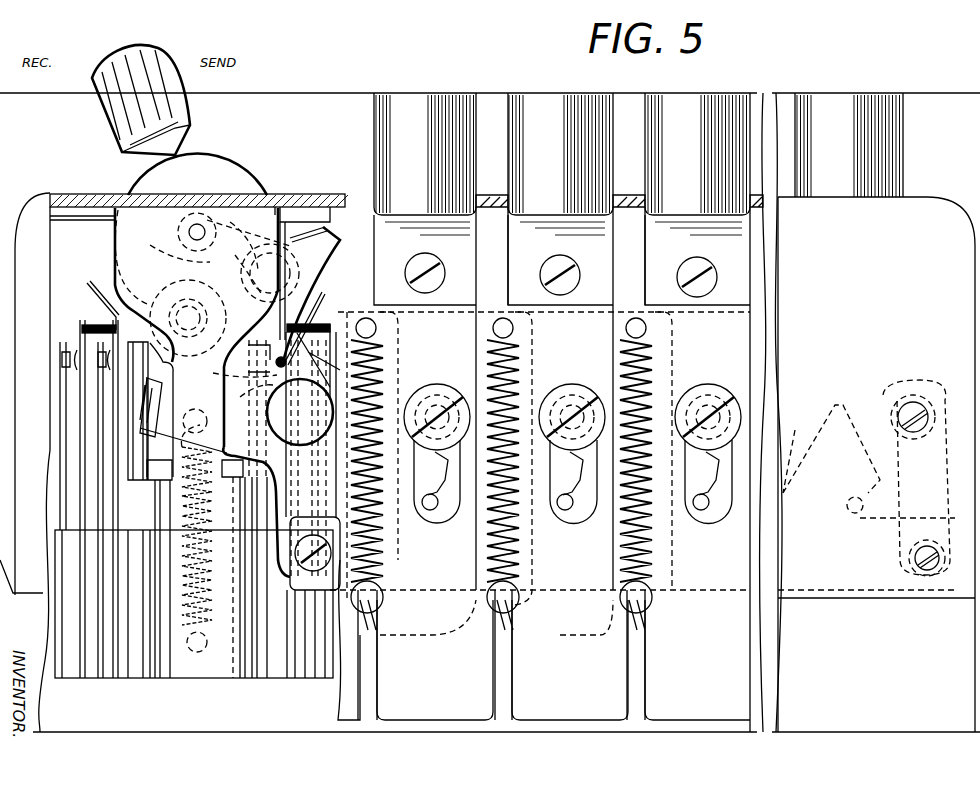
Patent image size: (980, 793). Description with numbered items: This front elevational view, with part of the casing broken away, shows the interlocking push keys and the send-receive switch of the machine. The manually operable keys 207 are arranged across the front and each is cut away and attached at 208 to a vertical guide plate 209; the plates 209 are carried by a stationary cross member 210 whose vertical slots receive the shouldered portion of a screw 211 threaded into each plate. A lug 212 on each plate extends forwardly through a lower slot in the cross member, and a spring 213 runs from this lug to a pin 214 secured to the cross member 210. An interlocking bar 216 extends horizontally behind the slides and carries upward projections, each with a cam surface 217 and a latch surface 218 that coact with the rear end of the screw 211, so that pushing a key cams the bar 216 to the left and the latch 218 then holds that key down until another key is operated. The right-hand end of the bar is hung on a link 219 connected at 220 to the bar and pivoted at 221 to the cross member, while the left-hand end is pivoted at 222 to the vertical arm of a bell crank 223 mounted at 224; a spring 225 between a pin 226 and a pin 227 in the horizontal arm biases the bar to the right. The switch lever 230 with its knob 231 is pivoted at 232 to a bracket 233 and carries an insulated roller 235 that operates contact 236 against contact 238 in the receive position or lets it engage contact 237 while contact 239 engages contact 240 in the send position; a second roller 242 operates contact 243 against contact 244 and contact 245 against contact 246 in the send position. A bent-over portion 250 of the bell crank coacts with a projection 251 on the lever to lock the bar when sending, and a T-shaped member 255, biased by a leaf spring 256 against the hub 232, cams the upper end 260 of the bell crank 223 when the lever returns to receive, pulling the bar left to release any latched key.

The manually operable key 207 is at (520, 120).
The attachment point 208 is at (427, 262).
The vertical guide plate 209 is at (473, 292).
The stationary cross member 210 is at (620, 310).
The screw 211 is at (441, 400).
The lug 212 is at (370, 640).
The spring 213 is at (385, 378).
The pin 214 is at (378, 328).
The interlocking bar 216 is at (820, 590).
The cam surface 217 is at (444, 460).
The latch surface 218 is at (432, 510).
The link 219 is at (935, 425).
The connection point 220 is at (922, 575).
The pivot 221 is at (918, 398).
The pivotal connection 222 is at (335, 548).
The bell crank 223 is at (245, 475).
The pivot 224 is at (272, 418).
The spring 225 is at (182, 610).
The pin 226 is at (203, 650).
The pin 227 is at (198, 410).
The switch lever 230 is at (230, 167).
The knob 231 is at (143, 50).
The pivot hub 232 is at (190, 230).
The bracket 233 is at (110, 268).
The insulated contact operating roller 235 is at (196, 258).
The contact 236 is at (326, 283).
The contact 237 is at (196, 327).
The contact 238 is at (320, 340).
The contact 239 is at (385, 356).
The contact 240 is at (360, 335).
The insulated roller 242 is at (219, 300).
The contact 243 is at (88, 283).
The contact 244 is at (95, 350).
The contact 245 is at (82, 325).
The contact 246 is at (62, 355).
The bent-over portion 250 is at (160, 380).
The downwardly extending projection 251 is at (183, 415).
The T-shaped member 255 is at (325, 237).
The leaf spring 256 is at (302, 232).
The upper end 260 is at (294, 442).